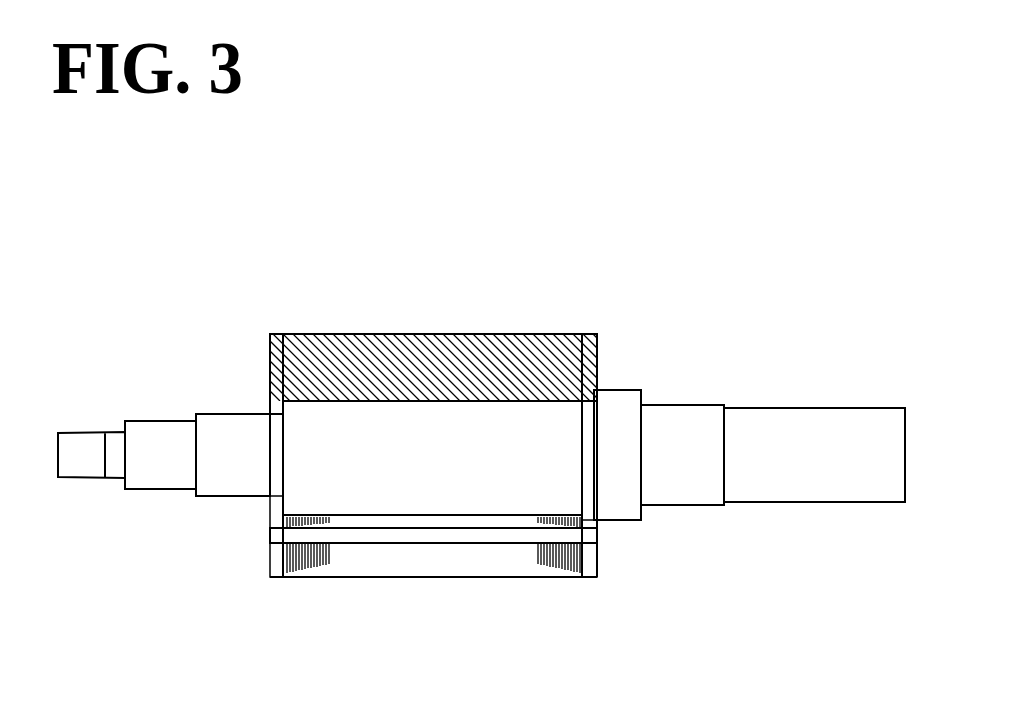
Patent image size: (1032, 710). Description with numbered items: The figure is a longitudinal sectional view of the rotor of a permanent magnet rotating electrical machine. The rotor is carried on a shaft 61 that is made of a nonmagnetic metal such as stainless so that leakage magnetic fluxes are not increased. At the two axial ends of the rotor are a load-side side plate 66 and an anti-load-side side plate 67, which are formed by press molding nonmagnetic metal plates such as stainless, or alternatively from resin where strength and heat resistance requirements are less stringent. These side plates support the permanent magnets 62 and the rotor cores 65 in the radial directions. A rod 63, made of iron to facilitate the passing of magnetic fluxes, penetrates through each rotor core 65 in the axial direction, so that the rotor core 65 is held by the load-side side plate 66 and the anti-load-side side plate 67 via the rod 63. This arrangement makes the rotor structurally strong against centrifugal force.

The shaft 61 is at (677, 496).
The permanent magnets 62 is at (415, 355).
The rod 63 is at (568, 542).
The rotor cores 65 is at (502, 557).
The load-side side plate 66 is at (597, 358).
The anti-load-side side plate 67 is at (270, 345).